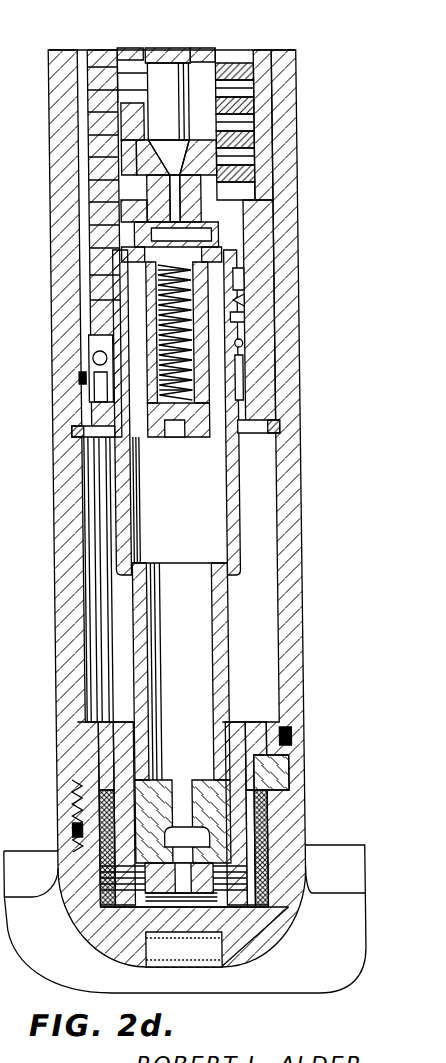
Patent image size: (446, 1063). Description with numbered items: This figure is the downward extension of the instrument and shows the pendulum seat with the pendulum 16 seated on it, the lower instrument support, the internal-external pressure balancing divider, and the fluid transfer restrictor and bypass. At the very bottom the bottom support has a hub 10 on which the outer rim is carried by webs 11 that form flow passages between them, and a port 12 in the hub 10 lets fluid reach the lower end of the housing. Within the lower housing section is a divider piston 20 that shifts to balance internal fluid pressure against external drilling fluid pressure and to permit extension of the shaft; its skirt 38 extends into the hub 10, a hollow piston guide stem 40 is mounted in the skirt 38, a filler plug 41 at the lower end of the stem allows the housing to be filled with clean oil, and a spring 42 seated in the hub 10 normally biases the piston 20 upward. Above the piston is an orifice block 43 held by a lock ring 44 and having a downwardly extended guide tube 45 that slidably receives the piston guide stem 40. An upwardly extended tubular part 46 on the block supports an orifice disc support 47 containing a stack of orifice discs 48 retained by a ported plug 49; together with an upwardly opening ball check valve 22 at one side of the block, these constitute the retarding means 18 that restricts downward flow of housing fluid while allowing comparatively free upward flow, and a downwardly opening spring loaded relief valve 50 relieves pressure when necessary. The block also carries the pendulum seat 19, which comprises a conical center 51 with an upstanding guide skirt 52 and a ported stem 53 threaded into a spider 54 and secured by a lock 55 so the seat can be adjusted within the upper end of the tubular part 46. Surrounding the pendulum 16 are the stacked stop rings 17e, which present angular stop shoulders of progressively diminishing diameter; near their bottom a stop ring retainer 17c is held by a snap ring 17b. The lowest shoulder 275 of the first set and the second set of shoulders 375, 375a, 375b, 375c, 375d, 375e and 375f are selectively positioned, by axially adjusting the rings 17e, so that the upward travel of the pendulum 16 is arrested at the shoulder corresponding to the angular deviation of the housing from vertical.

The hub 10 is at (270, 918).
The webs 11 is at (336, 944).
The port 12 is at (202, 950).
The pendulum 16 is at (174, 50).
The snap ring 17b is at (248, 316).
The stop ring retainer 17c is at (248, 302).
The stop rings 17e is at (107, 56).
The retarding means 18 is at (150, 313).
The pendulum seat 19 is at (148, 167).
The divider piston 20 is at (265, 718).
The ball check valve 22 is at (95, 361).
The skirt 38 is at (97, 795).
The piston guide stem 40 is at (226, 630).
The filler plug 41 is at (194, 915).
The spring 42 is at (278, 783).
The orifice block 43 is at (84, 377).
The lock ring 44 is at (280, 428).
The guide tube 45 is at (238, 497).
The tubular part 46 is at (124, 257).
The orifice disc support 47 is at (199, 428).
The orifice discs 48 is at (248, 284).
The ported plug 49 is at (160, 440).
The relief valve 50 is at (246, 343).
The conical center 51 is at (138, 158).
The guide skirt 52 is at (135, 118).
The ported stem 53 is at (137, 212).
The spider 54 is at (230, 235).
The lock 55 is at (152, 193).
The stop shoulder 275 is at (217, 50).
The stop shoulder 375 is at (250, 178).
The stop shoulder 375a is at (258, 160).
The stop shoulder 375b is at (258, 142).
The stop shoulder 375c is at (258, 124).
The stop shoulder 375d is at (258, 104).
The stop shoulder 375e is at (258, 88).
The stop shoulder 375f is at (262, 67).